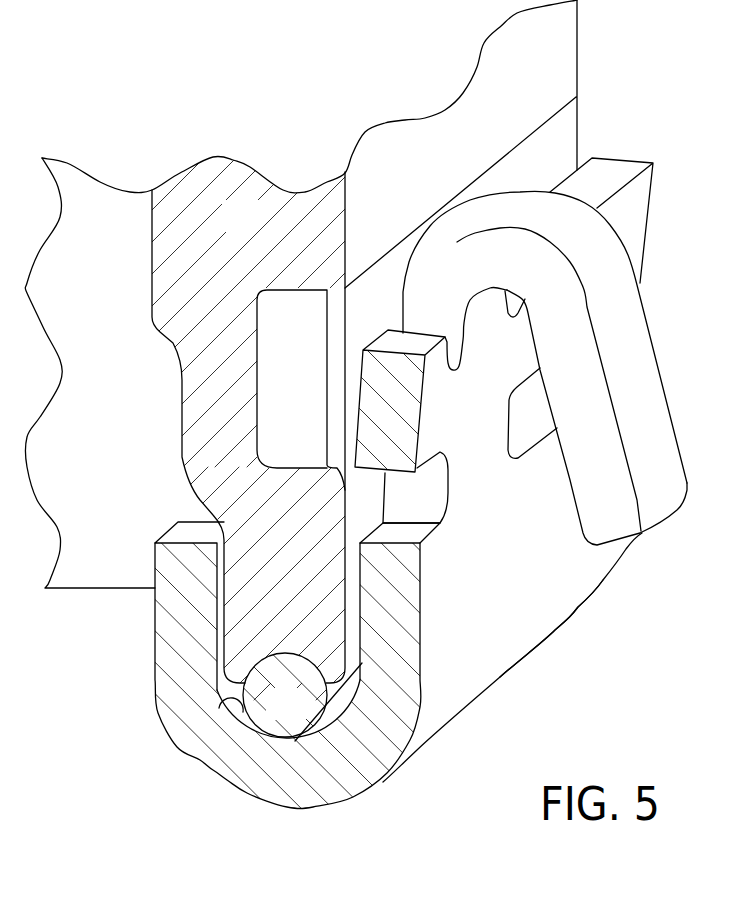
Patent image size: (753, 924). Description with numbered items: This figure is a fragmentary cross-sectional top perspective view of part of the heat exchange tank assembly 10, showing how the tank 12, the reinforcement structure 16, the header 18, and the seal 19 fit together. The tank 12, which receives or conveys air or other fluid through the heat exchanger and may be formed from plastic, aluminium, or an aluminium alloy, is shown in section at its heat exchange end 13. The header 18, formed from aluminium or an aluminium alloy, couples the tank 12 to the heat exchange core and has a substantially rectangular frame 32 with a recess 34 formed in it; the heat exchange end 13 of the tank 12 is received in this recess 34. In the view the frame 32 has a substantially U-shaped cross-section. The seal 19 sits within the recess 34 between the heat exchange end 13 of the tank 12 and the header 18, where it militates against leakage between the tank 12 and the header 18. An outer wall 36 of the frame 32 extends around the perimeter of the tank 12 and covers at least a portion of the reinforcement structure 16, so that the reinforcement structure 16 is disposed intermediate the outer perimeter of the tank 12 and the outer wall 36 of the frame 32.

The tank assembly 10 is at (92, 54).
The tank 12 is at (253, 229).
The heat exchange end 13 is at (332, 690).
The reinforcement structure 16 is at (552, 145).
The header 18 is at (109, 570).
The seal 19 is at (271, 717).
The frame 32 is at (172, 535).
The recess 34 is at (219, 715).
The outer wall 36 is at (533, 607).